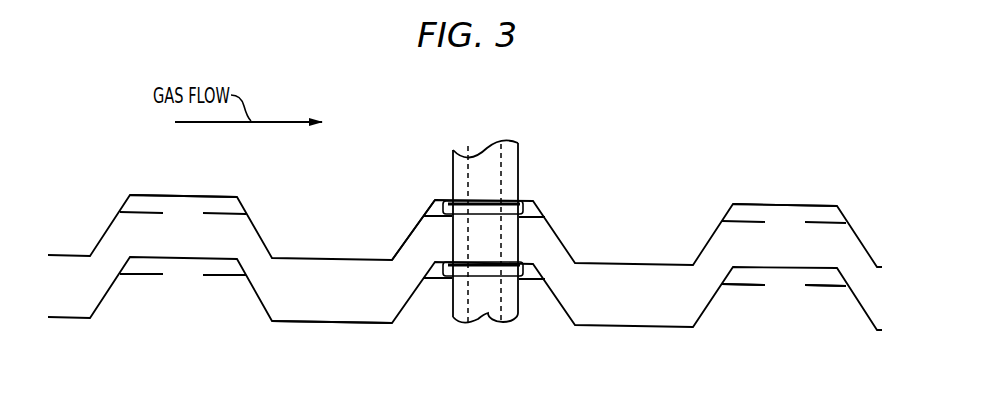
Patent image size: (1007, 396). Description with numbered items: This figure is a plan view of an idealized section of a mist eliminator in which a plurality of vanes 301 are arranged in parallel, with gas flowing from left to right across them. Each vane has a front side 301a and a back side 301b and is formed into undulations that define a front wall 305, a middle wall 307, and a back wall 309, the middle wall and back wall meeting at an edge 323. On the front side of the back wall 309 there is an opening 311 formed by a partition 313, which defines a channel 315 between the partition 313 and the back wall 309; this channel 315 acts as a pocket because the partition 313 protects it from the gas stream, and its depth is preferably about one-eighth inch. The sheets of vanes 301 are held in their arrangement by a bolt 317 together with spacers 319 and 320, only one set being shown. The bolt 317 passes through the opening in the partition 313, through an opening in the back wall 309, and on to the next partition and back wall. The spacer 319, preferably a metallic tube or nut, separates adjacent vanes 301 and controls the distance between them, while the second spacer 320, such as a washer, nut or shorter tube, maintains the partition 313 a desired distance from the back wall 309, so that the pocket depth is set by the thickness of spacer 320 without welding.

The vanes 301 is at (79, 308).
The front side 301a is at (878, 334).
The back side 301b is at (878, 259).
The front wall 305 is at (312, 321).
The middle wall 307 is at (408, 237).
The back wall 309 is at (782, 205).
The opening 311 is at (792, 285).
The partition 313 is at (527, 278).
The channel 315 is at (206, 264).
The bolt 317 is at (470, 187).
The spacer 319 is at (521, 181).
The second spacer 320 is at (524, 207).
The edge 323 is at (237, 196).